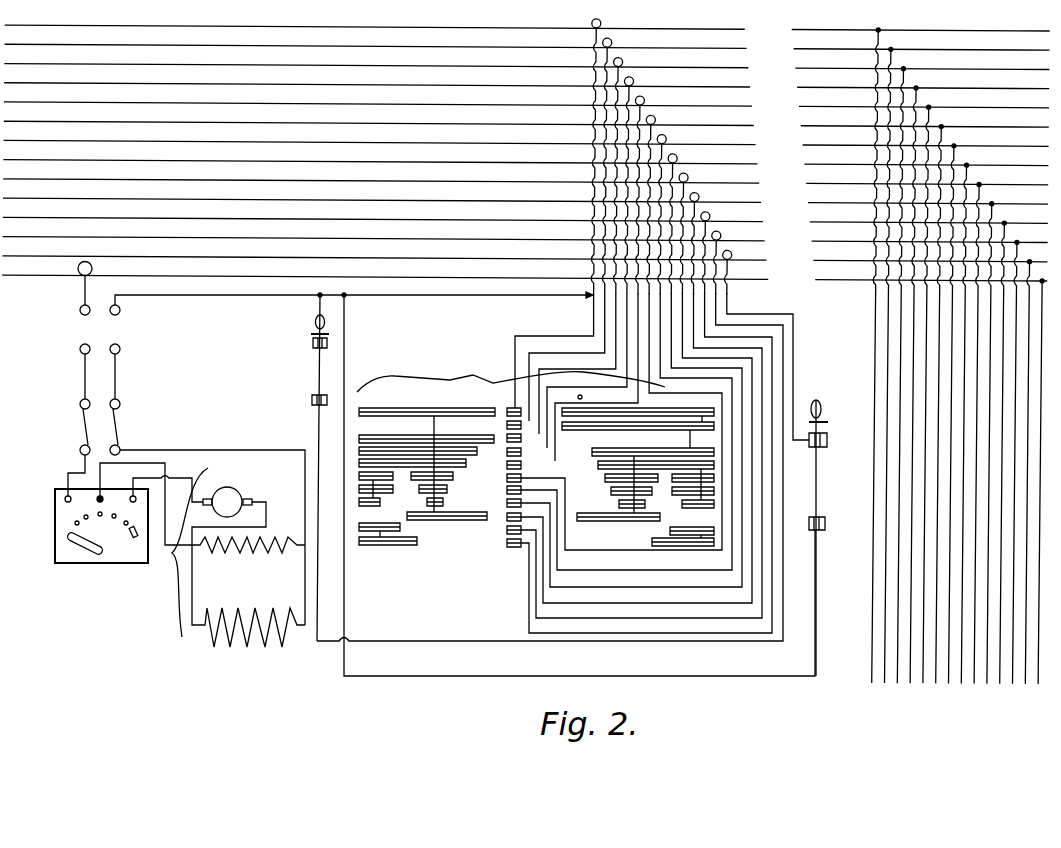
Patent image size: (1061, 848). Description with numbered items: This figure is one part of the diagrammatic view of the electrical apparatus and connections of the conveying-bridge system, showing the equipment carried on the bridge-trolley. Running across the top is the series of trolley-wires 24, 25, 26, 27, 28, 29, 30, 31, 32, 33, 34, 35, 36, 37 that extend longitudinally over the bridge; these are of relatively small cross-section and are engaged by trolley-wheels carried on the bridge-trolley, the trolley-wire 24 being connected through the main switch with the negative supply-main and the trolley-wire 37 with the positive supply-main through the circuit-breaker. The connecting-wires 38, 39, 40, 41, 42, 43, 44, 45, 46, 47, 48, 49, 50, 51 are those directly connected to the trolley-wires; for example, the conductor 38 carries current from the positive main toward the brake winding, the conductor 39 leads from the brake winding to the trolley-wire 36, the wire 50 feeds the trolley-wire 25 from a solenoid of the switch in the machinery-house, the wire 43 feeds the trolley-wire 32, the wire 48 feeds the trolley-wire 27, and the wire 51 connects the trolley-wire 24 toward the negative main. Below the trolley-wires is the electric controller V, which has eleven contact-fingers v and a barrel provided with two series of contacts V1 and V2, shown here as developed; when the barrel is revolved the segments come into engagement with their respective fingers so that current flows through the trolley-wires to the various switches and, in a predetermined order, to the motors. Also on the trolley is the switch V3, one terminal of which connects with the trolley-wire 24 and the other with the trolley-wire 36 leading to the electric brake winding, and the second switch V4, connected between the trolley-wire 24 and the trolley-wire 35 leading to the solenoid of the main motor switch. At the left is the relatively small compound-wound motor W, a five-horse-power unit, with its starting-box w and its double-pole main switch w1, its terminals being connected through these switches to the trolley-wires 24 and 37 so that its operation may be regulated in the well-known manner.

The trolley-wire 24 is at (527, 27).
The trolley-wire 25 is at (526, 46).
The trolley-wire 26 is at (526, 66).
The trolley-wire 27 is at (526, 85).
The trolley-wire 28 is at (526, 104).
The trolley-wire 29 is at (526, 123).
The trolley-wire 30 is at (526, 143).
The trolley-wire 31 is at (525, 162).
The trolley-wire 32 is at (525, 181).
The trolley-wire 33 is at (525, 200).
The trolley-wire 34 is at (525, 219).
The trolley-wire 35 is at (525, 239).
The trolley-wire 36 is at (524, 258).
The trolley-wire 37 is at (524, 277).
The conductor 38 is at (1040, 486).
The conductor 39 is at (1019, 483).
The connecting-wire 40 is at (1018, 466).
The connecting-wire 41 is at (1005, 457).
The connecting-wire 42 is at (990, 453).
The wire 43 is at (977, 438).
The connecting-wire 44 is at (963, 434).
The connecting-wire 45 is at (955, 417).
The connecting-wire 46 is at (940, 416).
The connecting-wire 47 is at (924, 399).
The wire 48 is at (910, 397).
The connecting-wire 49 is at (903, 382).
The wire 50 is at (886, 371).
The wire 51 is at (867, 363).
The electric controller V is at (563, 467).
The series of contacts V1 is at (417, 408).
The series of contacts V2 is at (638, 477).
The switch V3 is at (826, 538).
The second switch V4 is at (318, 364).
The contact-fingers v is at (507, 498).
The compound-wound motor W is at (202, 555).
The starting-box w is at (55, 523).
The double-pole main switch w1 is at (186, 444).